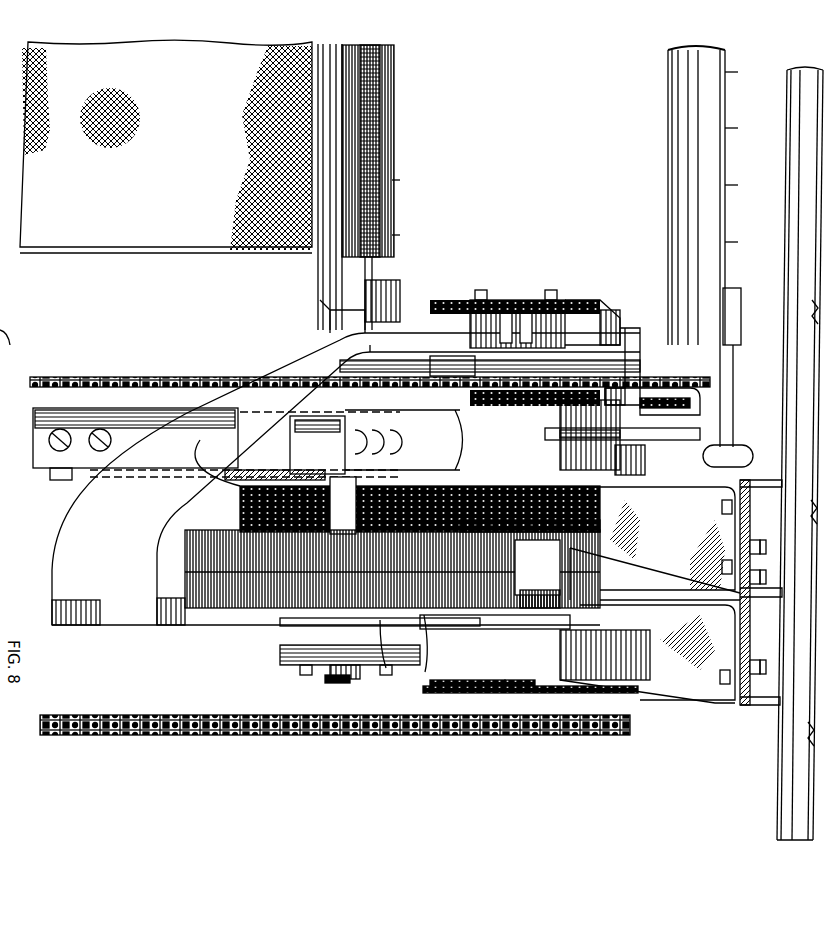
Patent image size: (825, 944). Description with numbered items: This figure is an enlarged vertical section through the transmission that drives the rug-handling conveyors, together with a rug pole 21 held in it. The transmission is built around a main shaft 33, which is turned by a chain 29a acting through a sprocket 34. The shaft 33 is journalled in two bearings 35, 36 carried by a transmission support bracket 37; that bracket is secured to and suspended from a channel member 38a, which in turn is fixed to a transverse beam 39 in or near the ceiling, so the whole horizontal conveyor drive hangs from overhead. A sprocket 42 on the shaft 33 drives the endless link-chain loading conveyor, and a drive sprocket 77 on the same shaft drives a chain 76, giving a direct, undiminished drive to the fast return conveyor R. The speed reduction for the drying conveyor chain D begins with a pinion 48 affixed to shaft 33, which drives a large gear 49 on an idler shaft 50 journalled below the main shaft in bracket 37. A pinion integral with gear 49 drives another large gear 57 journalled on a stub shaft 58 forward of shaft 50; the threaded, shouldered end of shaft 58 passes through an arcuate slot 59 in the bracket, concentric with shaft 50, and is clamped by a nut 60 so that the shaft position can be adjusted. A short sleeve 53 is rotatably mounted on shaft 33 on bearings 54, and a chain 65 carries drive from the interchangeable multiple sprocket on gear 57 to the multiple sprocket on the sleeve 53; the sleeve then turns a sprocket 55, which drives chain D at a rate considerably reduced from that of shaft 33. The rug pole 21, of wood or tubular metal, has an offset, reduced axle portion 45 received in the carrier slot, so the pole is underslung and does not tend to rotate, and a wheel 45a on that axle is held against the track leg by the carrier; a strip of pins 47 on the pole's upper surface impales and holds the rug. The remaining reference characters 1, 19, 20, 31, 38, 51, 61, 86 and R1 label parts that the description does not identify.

The conveyor chain 1 is at (178, 376).
The machine frame 19 is at (11, 326).
The table plate 20 is at (166, 146).
The rug pole 21 is at (704, 195).
The chain 29a is at (225, 738).
The housing frame 31 is at (346, 462).
The main shaft 33 is at (540, 297).
The sprocket 34 is at (537, 574).
The bearing 35 is at (568, 300).
The bearing 36 is at (590, 660).
The transmission support bracket 37 is at (695, 712).
The mounting bracket 38 is at (775, 505).
The channel member 38a is at (760, 705).
The transverse beam 39 is at (800, 453).
The sprocket 42 is at (625, 360).
The axle portion 45 is at (733, 362).
The wheel 45a is at (753, 456).
The strip of pins 47 is at (396, 70).
The pinion 48 is at (583, 566).
The large gear 49 is at (417, 661).
The idler shaft 50 is at (342, 505).
The sprocket chain 51 is at (230, 528).
The sleeve 53 is at (600, 460).
The bearings 54 is at (515, 415).
The sprocket 55 is at (588, 470).
The large gear 57 is at (392, 564).
The stub shaft 58 is at (350, 700).
The slot 59 is at (386, 668).
The nut 60 is at (300, 672).
The base plate 61 is at (448, 628).
The chain 65 is at (216, 444).
The chain 76 is at (505, 688).
The drive sprocket 77 is at (460, 680).
The shaft 86 is at (605, 390).
The fast return conveyor R is at (460, 410).
The rod bracket R1 is at (667, 401).
The drying conveyor chain D is at (664, 460).